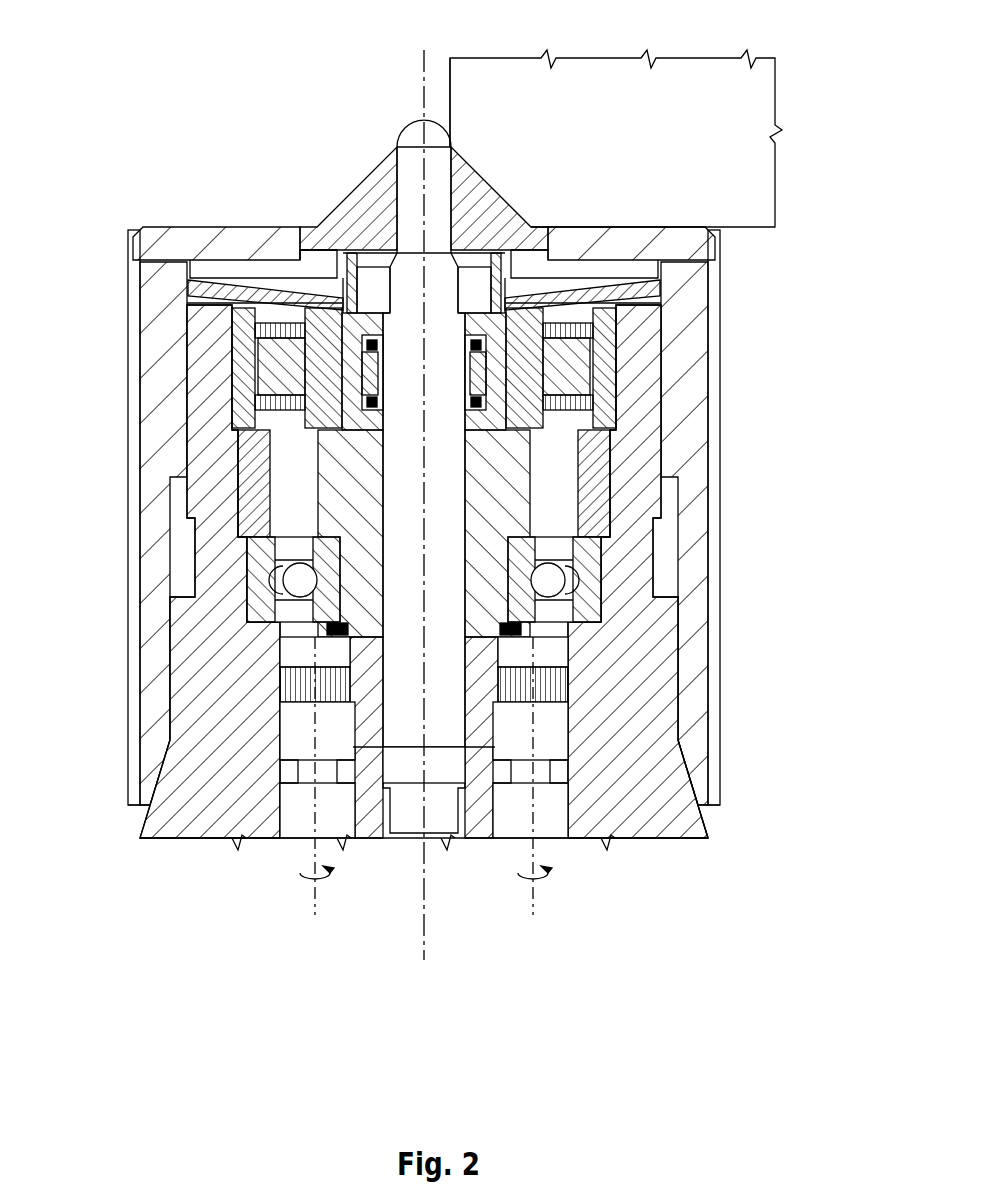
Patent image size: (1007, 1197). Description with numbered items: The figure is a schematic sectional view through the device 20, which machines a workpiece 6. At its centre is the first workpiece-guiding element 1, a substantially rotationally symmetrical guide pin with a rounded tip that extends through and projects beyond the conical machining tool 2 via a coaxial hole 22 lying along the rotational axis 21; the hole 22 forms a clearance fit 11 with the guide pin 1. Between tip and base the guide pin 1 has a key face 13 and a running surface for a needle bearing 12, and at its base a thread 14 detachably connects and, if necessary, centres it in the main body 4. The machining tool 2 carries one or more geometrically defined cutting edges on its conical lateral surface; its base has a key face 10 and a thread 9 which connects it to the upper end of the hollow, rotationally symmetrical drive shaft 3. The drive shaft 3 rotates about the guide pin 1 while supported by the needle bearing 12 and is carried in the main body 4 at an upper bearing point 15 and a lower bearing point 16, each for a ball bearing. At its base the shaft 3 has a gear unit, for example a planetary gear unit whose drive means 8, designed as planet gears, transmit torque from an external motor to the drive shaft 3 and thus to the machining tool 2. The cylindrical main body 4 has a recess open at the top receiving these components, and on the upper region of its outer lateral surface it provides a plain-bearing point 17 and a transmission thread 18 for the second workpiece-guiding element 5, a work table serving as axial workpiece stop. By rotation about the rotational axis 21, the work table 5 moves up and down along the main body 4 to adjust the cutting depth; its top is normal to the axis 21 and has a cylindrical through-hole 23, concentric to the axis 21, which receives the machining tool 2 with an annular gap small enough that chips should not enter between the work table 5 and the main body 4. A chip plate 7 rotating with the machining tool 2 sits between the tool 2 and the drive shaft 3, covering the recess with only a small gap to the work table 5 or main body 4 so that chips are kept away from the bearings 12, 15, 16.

The first workpiece-guiding element 1 is at (403, 130).
The machining tool 2 is at (365, 190).
The drive shaft 3 is at (510, 490).
The main body 4 is at (672, 823).
The second workpiece-guiding element 5 is at (690, 455).
The workpiece 6 is at (733, 203).
The chip plate 7 is at (183, 287).
The drive means 8 is at (540, 676).
The thread 9 is at (330, 286).
The key face 10 is at (615, 325).
The clearance fit 11 is at (483, 187).
The needle bearing 12 is at (482, 342).
The key face 13 is at (455, 287).
The thread 14 is at (408, 838).
The upper bearing point 15 is at (228, 360).
The lower bearing point 16 is at (242, 606).
The plain-bearing point 17 is at (175, 450).
The transmission thread 18 is at (167, 677).
The device 20 is at (690, 937).
The rotational axis 21 is at (422, 940).
The hole 22 is at (450, 137).
The through-hole 23 is at (315, 235).